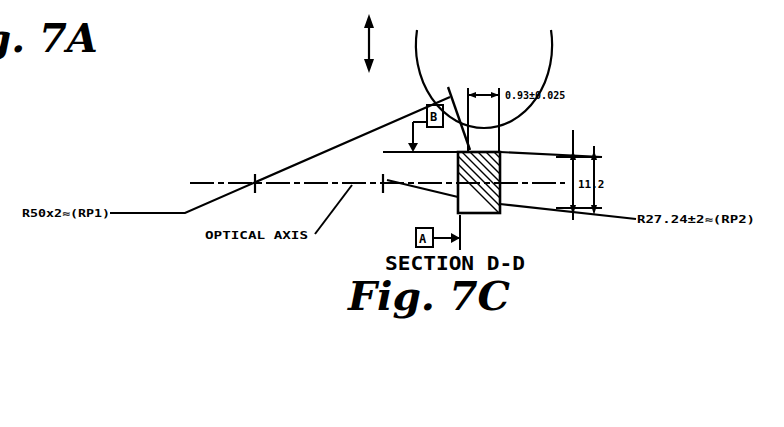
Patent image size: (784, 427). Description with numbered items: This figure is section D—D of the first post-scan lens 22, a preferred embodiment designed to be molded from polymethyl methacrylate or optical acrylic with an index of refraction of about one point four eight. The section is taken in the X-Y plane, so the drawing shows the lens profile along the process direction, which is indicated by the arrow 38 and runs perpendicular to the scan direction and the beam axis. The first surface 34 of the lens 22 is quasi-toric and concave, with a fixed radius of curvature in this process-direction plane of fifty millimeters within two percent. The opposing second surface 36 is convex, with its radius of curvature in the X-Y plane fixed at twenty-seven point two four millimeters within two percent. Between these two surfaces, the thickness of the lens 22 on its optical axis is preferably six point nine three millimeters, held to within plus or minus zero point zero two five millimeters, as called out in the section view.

The first post-scan lens 22 is at (606, 47).
The first surface 34 is at (445, 65).
The second surface 36 is at (526, 65).
The arrow 38 is at (362, 42).